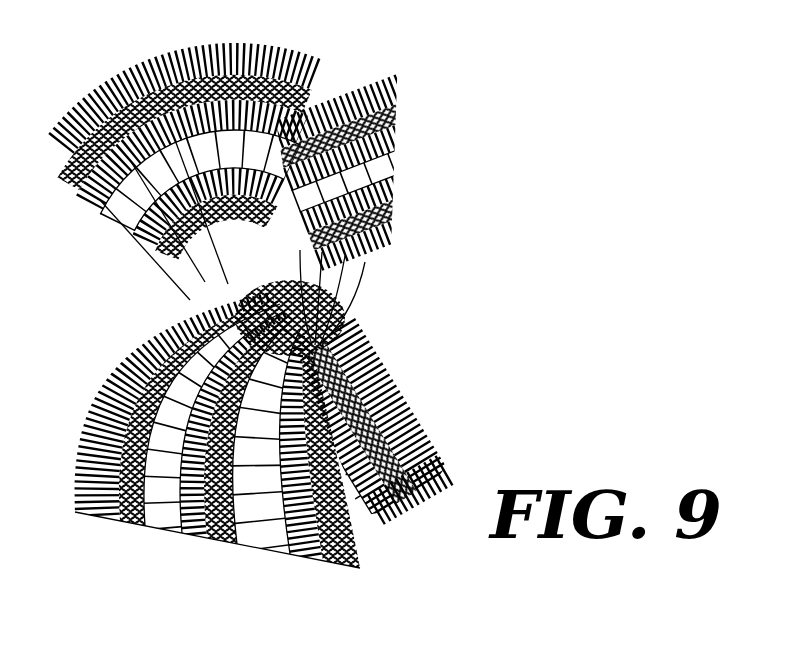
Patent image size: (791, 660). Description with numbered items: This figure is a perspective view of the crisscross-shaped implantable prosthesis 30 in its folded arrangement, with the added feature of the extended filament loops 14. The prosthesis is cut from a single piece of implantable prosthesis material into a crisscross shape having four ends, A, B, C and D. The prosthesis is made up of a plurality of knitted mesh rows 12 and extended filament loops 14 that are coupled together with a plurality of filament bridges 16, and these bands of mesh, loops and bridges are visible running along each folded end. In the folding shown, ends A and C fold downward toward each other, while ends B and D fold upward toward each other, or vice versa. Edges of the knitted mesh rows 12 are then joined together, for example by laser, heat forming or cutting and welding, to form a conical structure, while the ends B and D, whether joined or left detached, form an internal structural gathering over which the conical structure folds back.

The crisscross-shaped implantable prosthesis 30 is at (117, 55).
The extended filament loops 14 is at (62, 150).
The knitted mesh rows 12 is at (383, 220).
The filament bridges 16 is at (402, 160).
The end A is at (436, 422).
The end B is at (414, 80).
The end C is at (180, 566).
The end D is at (103, 228).